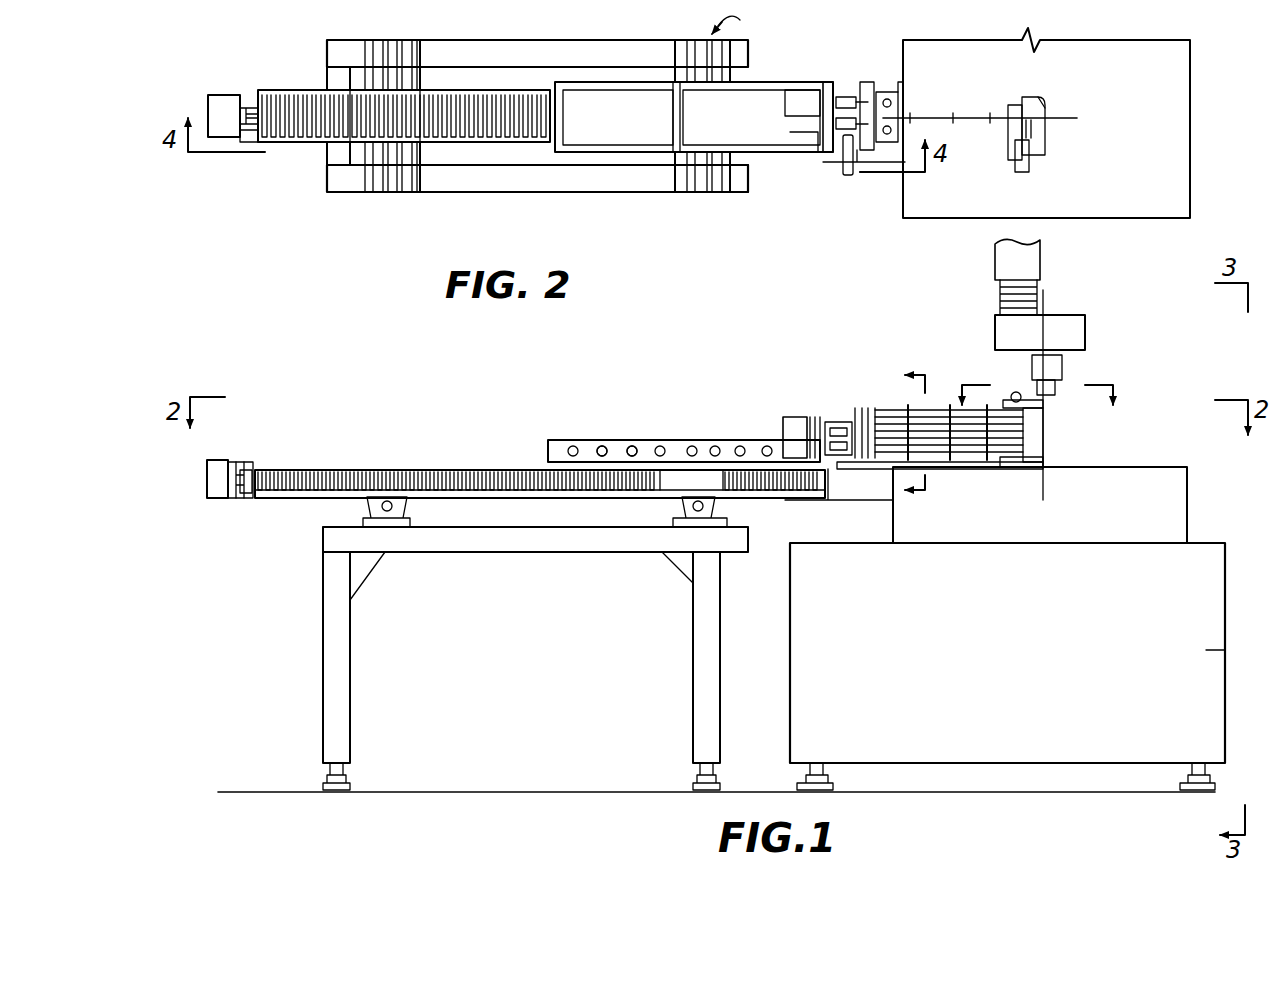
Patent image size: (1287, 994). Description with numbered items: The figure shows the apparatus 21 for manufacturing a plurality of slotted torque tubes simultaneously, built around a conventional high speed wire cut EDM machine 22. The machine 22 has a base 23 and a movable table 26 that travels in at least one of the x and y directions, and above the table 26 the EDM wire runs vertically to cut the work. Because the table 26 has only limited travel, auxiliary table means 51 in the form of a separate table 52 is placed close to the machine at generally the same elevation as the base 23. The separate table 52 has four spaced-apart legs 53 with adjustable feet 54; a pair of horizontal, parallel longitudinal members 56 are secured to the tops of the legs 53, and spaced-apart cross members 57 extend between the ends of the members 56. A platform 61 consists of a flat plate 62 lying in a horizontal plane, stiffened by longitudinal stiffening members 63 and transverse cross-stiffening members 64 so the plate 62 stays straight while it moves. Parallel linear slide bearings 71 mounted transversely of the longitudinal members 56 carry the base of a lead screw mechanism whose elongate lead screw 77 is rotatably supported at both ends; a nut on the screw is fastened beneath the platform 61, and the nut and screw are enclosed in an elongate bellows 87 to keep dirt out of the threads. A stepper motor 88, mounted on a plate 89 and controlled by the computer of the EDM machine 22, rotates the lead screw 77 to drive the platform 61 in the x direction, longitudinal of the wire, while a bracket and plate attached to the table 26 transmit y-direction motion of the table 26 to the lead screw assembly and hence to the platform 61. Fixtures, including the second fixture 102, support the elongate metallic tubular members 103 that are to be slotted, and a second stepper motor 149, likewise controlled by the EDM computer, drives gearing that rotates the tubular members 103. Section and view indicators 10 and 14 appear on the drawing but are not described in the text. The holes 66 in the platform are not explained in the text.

In FIG. 1, the section line 10 is at (1041, 380).
In FIG. 1, the section line 14 is at (860, 434).
In FIG. 2, the apparatus 21 is at (749, 25).
In FIG. 2, the wire cut EDM machine 22 is at (1201, 88).
In FIG. 1, the wire cut EDM machine 22 is at (1228, 598).
In FIG. 1, the base 23 is at (1206, 650).
In FIG. 1, the movable table 26 is at (1187, 508).
In FIG. 1, the auxiliary table means 51 is at (318, 570).
In FIG. 1, the separate table 52 is at (320, 652).
In FIG. 1, the legs 53 is at (345, 655).
In FIG. 1, the adjustable feet 54 is at (352, 790).
In FIG. 2, the longitudinal members 56 is at (506, 30).
In FIG. 1, the longitudinal members 56 is at (536, 552).
In FIG. 2, the cross members 57 is at (330, 154).
In FIG. 2, the platform 61 is at (788, 95).
In FIG. 1, the platform 61 is at (410, 498).
In FIG. 2, the flat plate 62 is at (604, 92).
In FIG. 2, the stiffening members 63 is at (652, 90).
In FIG. 2, the cross-stiffening members 64 is at (660, 108).
In FIG. 1, the holes 66 is at (630, 442).
In FIG. 2, the linear slide bearings 71 is at (406, 162).
In FIG. 2, the lead screw 77 is at (246, 140).
In FIG. 1, the lead screw 77 is at (254, 498).
In FIG. 2, the bellows 87 is at (306, 94).
In FIG. 1, the bellows 87 is at (340, 470).
In FIG. 2, the stepper motor 88 is at (220, 105).
In FIG. 1, the stepper motor 88 is at (216, 470).
In FIG. 2, the plate 89 is at (256, 110).
In FIG. 1, the plate 89 is at (262, 468).
In FIG. 2, the second fixture 102 is at (1045, 130).
In FIG. 1, the second fixture 102 is at (1048, 458).
In FIG. 2, the tubular members 103 is at (983, 92).
In FIG. 1, the tubular members 103 is at (900, 405).
In FIG. 2, the stepper motor 149 is at (842, 92).
In FIG. 1, the stepper motor 149 is at (794, 428).